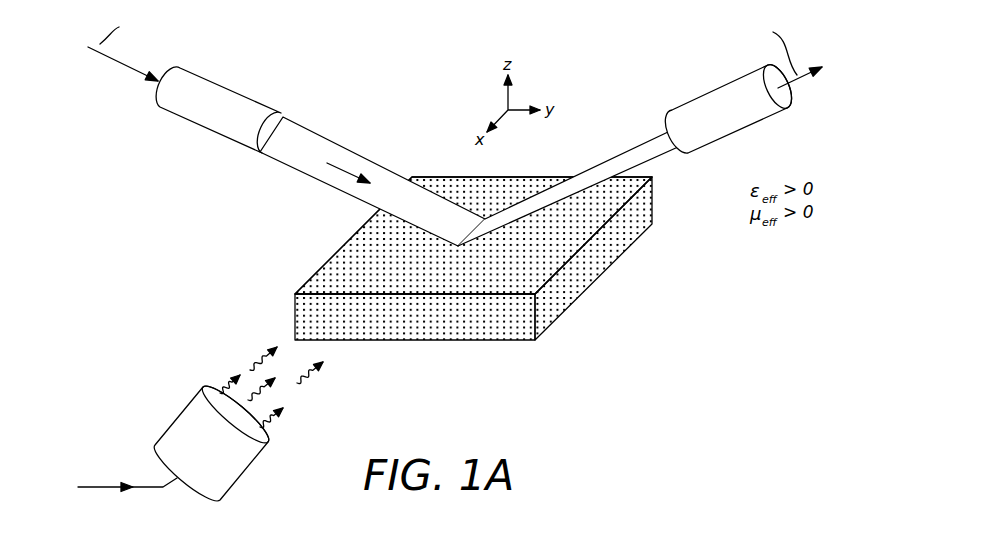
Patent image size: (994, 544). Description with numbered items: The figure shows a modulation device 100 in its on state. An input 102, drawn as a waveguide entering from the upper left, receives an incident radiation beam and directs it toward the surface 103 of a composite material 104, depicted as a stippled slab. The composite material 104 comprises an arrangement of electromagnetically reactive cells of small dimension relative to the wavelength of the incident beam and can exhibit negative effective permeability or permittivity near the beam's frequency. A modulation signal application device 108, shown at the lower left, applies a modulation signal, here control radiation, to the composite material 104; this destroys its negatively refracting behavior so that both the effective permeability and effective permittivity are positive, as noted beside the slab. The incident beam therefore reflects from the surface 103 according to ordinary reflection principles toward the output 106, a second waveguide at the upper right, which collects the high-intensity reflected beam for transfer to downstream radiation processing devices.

The modulation device 100 is at (685, 415).
The input 102 is at (220, 90).
The surface 103 is at (575, 240).
The composite material 104 is at (667, 175).
The output 106 is at (723, 92).
The modulation signal application device 108 is at (190, 420).